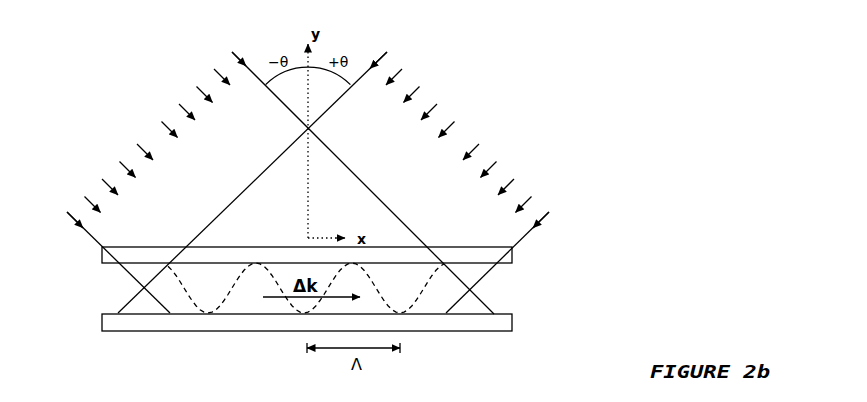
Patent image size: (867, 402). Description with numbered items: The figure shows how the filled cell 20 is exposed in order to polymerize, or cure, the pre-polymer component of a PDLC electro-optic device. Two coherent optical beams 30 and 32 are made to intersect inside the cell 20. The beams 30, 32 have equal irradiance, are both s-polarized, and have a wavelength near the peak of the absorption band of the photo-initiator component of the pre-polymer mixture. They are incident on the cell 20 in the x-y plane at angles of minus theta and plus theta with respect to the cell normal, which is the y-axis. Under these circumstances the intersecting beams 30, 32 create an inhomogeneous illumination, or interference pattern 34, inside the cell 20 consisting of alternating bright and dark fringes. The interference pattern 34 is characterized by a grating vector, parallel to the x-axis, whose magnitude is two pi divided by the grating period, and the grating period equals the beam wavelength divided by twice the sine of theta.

The cell 20 is at (97, 248).
The coherent optical beam 30 is at (333, 182).
The coherent optical beam 32 is at (280, 183).
The interference pattern 34 is at (428, 307).